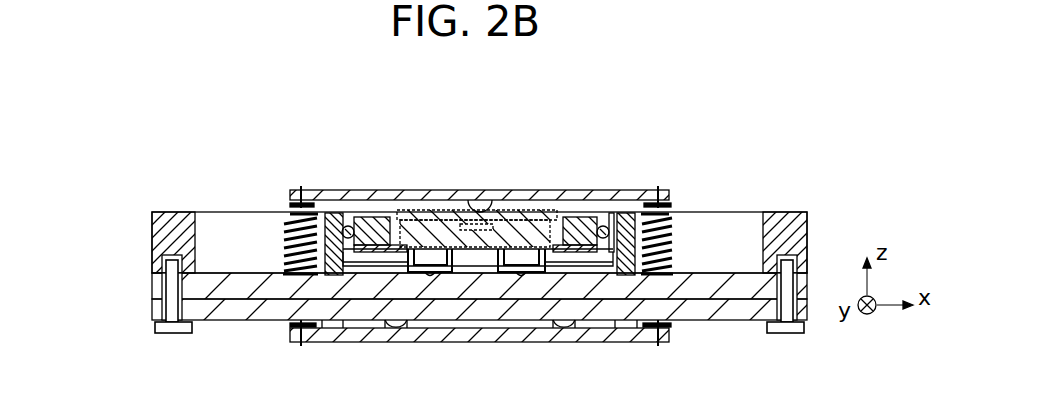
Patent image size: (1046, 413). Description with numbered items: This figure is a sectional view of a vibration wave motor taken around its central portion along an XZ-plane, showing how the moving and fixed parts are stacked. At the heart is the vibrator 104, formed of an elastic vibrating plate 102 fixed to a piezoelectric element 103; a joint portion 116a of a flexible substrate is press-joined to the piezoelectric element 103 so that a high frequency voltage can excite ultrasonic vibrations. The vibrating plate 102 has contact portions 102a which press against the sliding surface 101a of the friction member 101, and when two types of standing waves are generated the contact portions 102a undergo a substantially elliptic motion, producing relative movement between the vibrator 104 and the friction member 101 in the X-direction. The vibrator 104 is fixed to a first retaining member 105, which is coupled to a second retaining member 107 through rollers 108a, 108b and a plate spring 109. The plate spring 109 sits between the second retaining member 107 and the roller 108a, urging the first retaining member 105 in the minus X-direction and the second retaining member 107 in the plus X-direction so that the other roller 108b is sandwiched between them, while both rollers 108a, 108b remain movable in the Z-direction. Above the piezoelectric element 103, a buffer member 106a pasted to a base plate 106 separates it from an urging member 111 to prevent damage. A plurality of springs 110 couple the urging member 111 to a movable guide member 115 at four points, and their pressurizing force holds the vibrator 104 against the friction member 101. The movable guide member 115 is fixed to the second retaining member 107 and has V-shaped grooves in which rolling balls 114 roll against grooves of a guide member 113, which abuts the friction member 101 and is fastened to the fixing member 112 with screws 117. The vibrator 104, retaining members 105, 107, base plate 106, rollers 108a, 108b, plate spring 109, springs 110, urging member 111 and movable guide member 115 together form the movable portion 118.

The friction member 101 is at (802, 220).
The sliding surface 101a is at (748, 285).
The vibrating plate 102 is at (415, 243).
The contact portions 102a is at (431, 270).
The piezoelectric element 103 is at (488, 199).
The vibrator 104 is at (478, 140).
The first retaining member 105 is at (599, 213).
The base plate 106 is at (537, 212).
The buffer member 106a is at (484, 238).
The second retaining member 107 is at (660, 187).
The roller 108a is at (615, 213).
The roller 108b is at (347, 224).
The plate spring 109 is at (623, 216).
The springs 110 is at (285, 222).
The urging member 111 is at (320, 194).
The fixing member 112 is at (172, 220).
The guide member 113 is at (716, 312).
The rolling balls 114 is at (397, 325).
The movable guide member 115 is at (648, 334).
The joint portion 116a is at (454, 220).
The screws 117 is at (173, 333).
The movable portion 118 is at (735, 92).